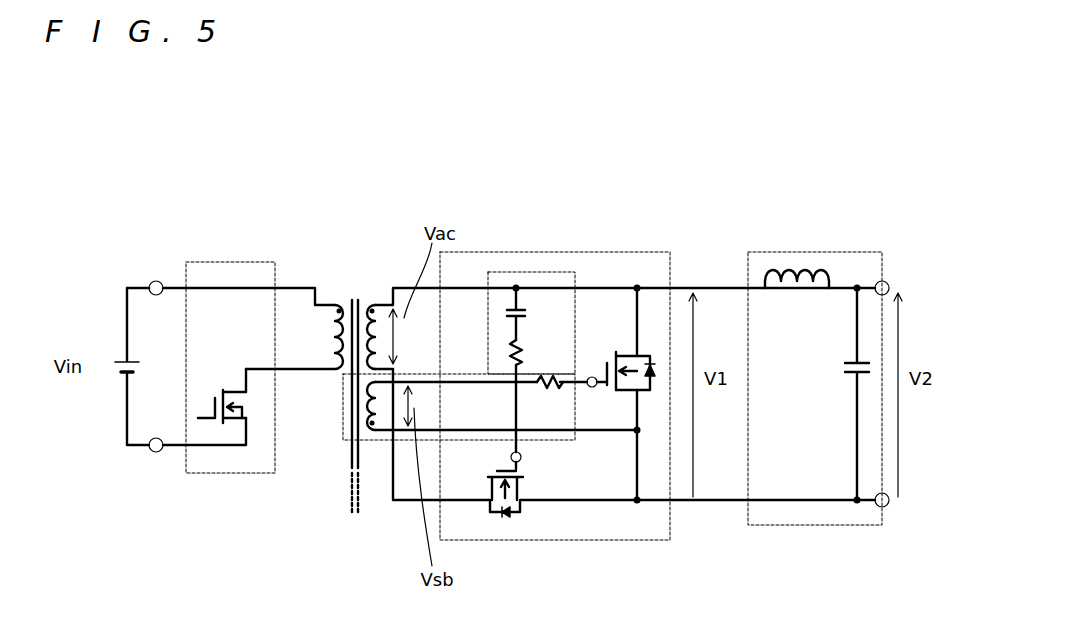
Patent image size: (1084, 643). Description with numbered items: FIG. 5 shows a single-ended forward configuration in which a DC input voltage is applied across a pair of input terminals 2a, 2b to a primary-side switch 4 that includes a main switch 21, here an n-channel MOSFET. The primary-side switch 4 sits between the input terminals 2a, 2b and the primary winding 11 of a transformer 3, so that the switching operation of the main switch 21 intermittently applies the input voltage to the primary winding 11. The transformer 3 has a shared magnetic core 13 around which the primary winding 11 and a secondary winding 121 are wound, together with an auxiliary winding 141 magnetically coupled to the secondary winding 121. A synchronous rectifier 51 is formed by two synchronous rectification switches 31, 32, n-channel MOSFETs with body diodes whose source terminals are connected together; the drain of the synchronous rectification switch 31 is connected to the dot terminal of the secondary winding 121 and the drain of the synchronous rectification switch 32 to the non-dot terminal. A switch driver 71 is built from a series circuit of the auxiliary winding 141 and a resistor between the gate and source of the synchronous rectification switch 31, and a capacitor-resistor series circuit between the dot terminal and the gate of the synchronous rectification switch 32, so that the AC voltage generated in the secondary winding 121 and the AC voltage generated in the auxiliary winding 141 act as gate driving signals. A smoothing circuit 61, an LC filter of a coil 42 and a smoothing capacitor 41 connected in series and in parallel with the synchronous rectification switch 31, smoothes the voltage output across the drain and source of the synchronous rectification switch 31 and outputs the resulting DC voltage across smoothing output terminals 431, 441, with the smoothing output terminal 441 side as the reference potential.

The input terminal 2a is at (155, 281).
The input terminal 2b is at (155, 452).
The primary-side switch 4 is at (255, 253).
The main switch 21 is at (237, 383).
The primary winding 11 is at (333, 303).
The transformer 3 is at (357, 280).
The magnetic core 13 is at (351, 457).
The secondary winding 121 is at (373, 304).
The auxiliary winding 141 is at (372, 436).
The synchronous rectifier 51 is at (522, 244).
The switch driver 71 is at (467, 373).
The synchronous rectification switch 31 is at (627, 355).
The synchronous rectification switch 32 is at (520, 488).
The smoothing circuit 61 is at (831, 244).
The coil 42 is at (781, 289).
The smoothing capacitor 41 is at (853, 360).
The smoothing output terminal 431 is at (888, 282).
The smoothing output terminal 441 is at (888, 506).